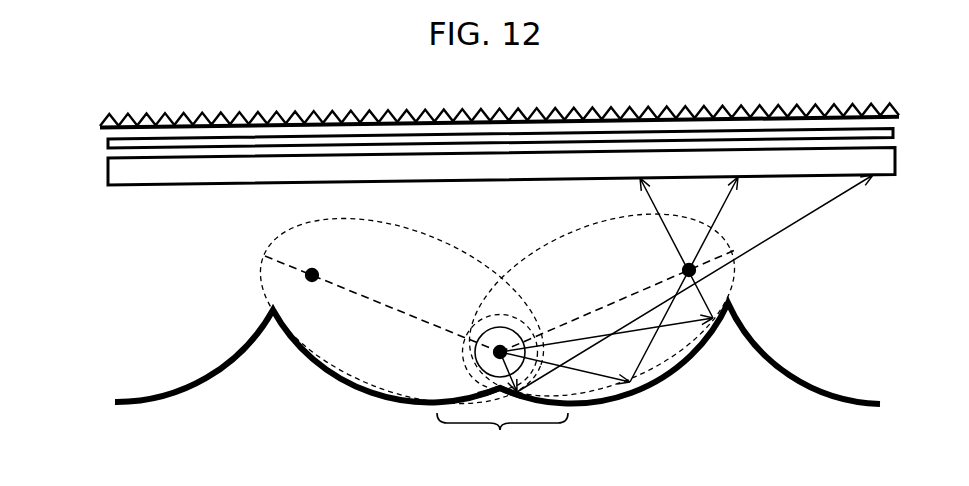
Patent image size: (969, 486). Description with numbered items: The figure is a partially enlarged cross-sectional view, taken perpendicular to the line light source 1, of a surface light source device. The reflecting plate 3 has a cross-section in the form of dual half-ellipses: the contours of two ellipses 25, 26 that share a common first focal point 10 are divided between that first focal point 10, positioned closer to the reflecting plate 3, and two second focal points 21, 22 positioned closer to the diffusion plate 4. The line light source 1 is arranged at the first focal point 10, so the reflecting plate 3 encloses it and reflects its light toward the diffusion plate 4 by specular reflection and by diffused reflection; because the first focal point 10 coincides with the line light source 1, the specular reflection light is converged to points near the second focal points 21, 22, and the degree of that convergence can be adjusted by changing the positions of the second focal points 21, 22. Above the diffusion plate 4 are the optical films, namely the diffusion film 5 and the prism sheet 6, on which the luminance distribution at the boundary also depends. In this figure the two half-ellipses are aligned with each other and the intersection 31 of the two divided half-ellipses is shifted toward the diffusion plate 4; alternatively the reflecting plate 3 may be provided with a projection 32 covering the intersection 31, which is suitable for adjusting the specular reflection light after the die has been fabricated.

The line light source 1 is at (482, 336).
The reflecting plate 3 is at (600, 399).
The diffusion plate 4 is at (108, 174).
The diffusion film 5 is at (108, 143).
The prism sheet 6 is at (100, 125).
The first focal point 10 is at (500, 345).
The second focal point 21 is at (697, 270).
The second focal point 22 is at (306, 274).
The ellipse 25 is at (722, 237).
The ellipse 26 is at (278, 240).
The intersection 31 is at (497, 386).
The projection 32 is at (502, 439).